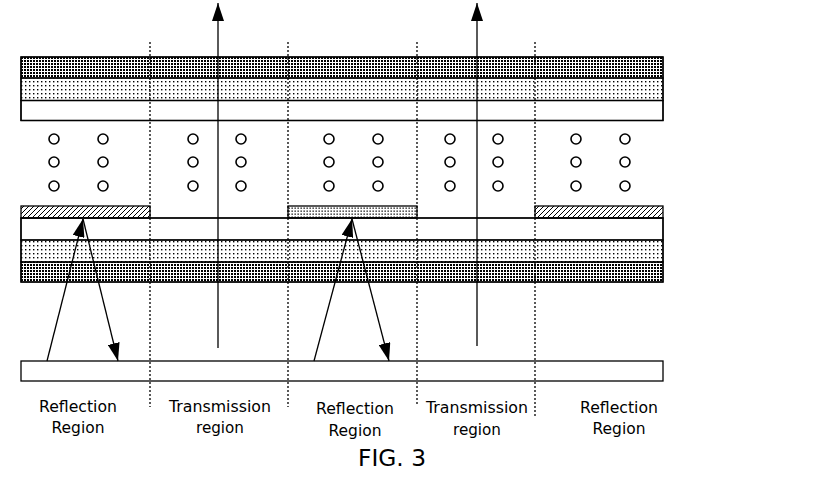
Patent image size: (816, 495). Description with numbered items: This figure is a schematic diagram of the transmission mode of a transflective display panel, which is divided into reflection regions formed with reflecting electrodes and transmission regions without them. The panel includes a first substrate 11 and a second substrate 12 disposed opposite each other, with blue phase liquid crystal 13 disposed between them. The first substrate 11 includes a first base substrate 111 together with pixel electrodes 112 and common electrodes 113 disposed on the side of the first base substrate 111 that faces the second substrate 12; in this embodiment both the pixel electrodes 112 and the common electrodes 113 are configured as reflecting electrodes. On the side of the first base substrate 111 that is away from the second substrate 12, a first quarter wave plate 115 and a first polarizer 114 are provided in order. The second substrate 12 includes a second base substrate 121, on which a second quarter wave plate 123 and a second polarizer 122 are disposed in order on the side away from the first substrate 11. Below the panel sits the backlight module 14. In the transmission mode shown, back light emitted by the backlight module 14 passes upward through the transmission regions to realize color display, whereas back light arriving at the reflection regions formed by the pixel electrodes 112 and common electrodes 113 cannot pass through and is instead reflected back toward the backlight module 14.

The first substrate 11 is at (732, 178).
The first base substrate 111 is at (631, 237).
The pixel electrodes 112 is at (669, 195).
The common electrodes 113 is at (360, 216).
The first polarizer 114 is at (641, 271).
The first quarter wave plate 115 is at (639, 247).
The second substrate 12 is at (720, 48).
The second base substrate 121 is at (636, 117).
The second polarizer 122 is at (636, 73).
The second quarter wave plate 123 is at (636, 93).
The blue phase liquid crystal 13 is at (629, 165).
The backlight module 14 is at (634, 369).